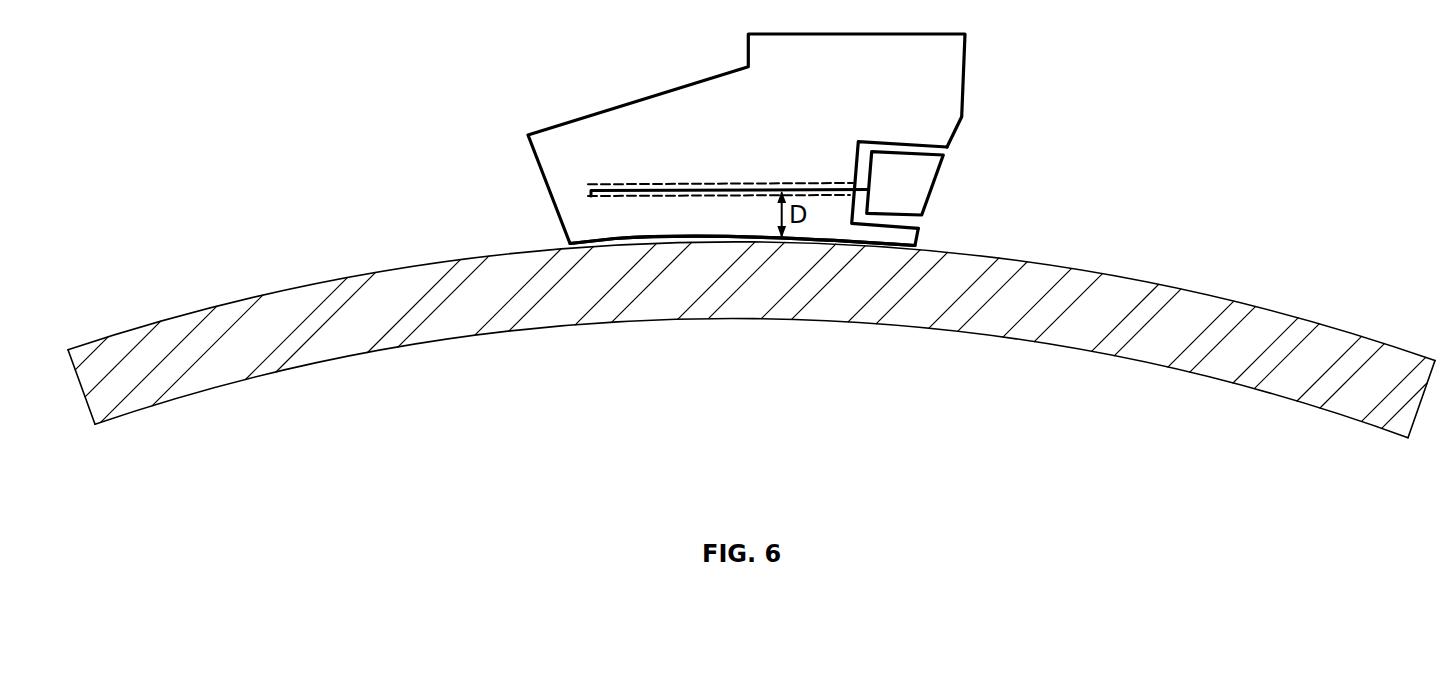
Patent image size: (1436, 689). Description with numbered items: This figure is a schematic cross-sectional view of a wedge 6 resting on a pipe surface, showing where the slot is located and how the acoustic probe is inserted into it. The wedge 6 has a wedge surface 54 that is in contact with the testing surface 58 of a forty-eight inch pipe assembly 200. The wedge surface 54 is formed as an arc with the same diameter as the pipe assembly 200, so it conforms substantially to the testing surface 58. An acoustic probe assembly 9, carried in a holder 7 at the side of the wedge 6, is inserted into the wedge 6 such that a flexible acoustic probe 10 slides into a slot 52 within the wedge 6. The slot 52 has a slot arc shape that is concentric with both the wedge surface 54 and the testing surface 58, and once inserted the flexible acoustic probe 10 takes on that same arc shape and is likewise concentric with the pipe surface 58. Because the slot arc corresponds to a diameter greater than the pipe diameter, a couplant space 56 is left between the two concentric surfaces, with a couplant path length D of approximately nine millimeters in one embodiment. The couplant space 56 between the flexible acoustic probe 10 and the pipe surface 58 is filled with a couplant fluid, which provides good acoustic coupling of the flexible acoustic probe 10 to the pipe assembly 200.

The wedge 6 is at (718, 95).
The mounting bracket 7 is at (925, 188).
The acoustic probe assembly 9 is at (910, 198).
The flexible acoustic probe 10 is at (731, 187).
The slot 52 is at (679, 184).
The wedge surface 54 is at (613, 240).
The couplant space 56 is at (715, 213).
The testing surface 58 is at (477, 258).
The pipe assembly 200 is at (542, 315).